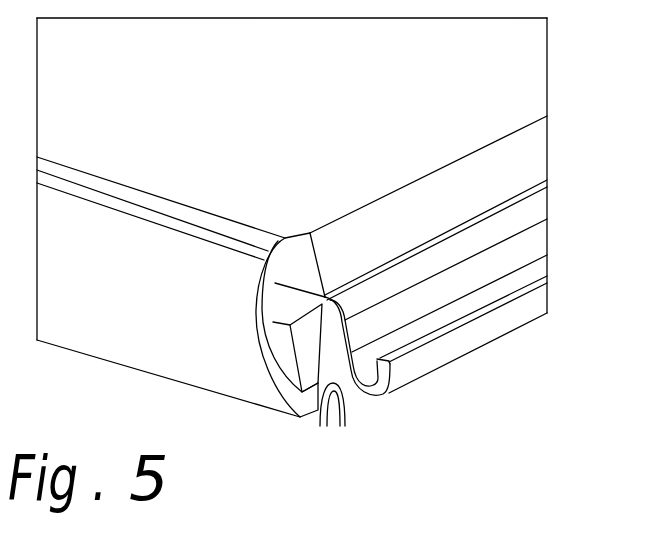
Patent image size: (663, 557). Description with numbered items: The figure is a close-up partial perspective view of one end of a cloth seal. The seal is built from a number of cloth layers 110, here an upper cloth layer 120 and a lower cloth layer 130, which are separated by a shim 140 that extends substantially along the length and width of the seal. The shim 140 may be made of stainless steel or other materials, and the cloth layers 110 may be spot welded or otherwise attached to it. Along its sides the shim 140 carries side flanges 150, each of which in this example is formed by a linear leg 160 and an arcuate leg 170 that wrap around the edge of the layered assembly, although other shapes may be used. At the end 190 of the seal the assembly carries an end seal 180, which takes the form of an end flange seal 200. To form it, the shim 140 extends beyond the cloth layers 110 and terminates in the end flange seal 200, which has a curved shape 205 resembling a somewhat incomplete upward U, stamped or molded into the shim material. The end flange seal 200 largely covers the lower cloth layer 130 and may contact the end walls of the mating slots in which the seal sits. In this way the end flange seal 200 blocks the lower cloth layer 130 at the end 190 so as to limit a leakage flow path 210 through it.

The cloth layers 110 is at (556, 27).
The upper cloth layer 120 is at (530, 72).
The lower cloth layer 130 is at (339, 386).
The shim 140 is at (557, 183).
The side flanges 150 is at (91, 364).
The linear leg 160 is at (333, 398).
The arcuate leg 170 is at (207, 333).
The end seal 180 is at (402, 407).
The end 190 is at (518, 152).
The end flange seal 200 is at (435, 375).
The curved shape 205 is at (472, 338).
The leakage flow path 210 is at (480, 440).